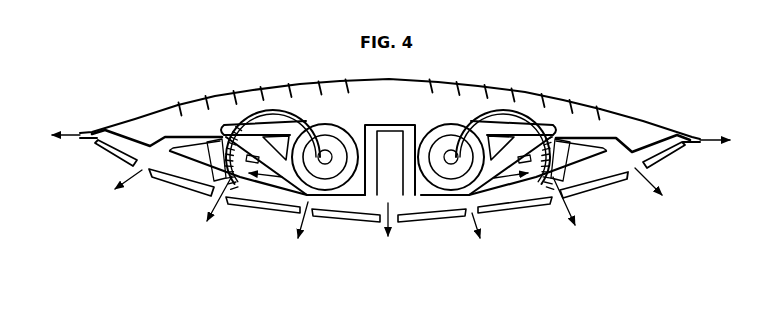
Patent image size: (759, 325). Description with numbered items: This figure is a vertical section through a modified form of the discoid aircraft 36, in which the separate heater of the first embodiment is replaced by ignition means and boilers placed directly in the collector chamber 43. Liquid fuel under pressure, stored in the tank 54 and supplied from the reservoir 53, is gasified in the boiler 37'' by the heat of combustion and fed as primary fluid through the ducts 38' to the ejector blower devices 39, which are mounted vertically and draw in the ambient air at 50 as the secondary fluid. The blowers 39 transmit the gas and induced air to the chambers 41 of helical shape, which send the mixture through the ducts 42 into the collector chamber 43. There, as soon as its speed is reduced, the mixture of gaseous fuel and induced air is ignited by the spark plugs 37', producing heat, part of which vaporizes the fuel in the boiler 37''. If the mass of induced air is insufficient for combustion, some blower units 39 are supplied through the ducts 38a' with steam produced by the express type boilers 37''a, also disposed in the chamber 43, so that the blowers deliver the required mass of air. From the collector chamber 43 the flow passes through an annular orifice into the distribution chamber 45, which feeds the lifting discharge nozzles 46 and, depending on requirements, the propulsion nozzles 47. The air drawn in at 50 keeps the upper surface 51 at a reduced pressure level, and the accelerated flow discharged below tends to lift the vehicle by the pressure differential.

The discoid aircraft 36 is at (633, 118).
The spark plugs 37' is at (388, 203).
The boiler 37'' is at (388, 198).
The express type boilers 37''a is at (388, 185).
The ducts 38' is at (377, 118).
The ducts 38a' is at (402, 124).
The ejector blower devices 39 is at (427, 178).
The chambers of helical shape 41 is at (314, 133).
The ducts 42 is at (193, 148).
The collector chamber 43 is at (142, 171).
The distribution chamber 45 is at (334, 221).
The lifting discharge nozzles 46 is at (566, 198).
The propulsion nozzles 47 is at (695, 148).
The air intake 50 is at (178, 103).
The upper surface 51 is at (401, 79).
The reservoir 53 is at (296, 116).
The tank 54 is at (539, 128).